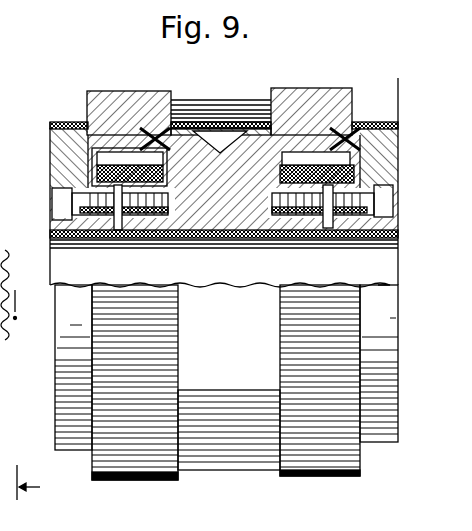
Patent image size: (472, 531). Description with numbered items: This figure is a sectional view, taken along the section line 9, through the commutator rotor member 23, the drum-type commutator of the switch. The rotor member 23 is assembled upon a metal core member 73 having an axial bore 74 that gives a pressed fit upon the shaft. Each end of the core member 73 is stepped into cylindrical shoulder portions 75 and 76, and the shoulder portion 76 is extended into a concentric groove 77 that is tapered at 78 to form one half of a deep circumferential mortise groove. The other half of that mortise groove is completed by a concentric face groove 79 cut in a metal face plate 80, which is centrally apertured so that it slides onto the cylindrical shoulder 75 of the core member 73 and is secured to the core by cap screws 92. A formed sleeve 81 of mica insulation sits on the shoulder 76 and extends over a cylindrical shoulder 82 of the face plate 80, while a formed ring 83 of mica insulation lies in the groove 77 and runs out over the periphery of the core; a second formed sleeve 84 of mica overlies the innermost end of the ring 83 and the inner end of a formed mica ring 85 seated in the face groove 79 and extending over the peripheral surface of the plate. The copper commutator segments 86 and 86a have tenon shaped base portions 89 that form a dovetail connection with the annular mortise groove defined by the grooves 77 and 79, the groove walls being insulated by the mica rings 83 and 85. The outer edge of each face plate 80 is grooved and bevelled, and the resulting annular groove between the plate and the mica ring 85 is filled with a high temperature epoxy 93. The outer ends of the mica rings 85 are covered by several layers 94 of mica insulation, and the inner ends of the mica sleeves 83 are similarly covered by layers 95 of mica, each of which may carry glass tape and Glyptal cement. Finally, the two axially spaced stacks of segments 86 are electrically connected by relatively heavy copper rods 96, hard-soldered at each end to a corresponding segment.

The section line 9 is at (36, 483).
The commutator rotor member 23 is at (236, 334).
The metal core member 73 is at (232, 239).
The axial bore 74 is at (118, 240).
The cylindrical shoulder portion 75 is at (82, 240).
The cylindrical shoulder portion 76 is at (273, 192).
The concentric groove 77 is at (268, 167).
The taper 78 is at (183, 122).
The concentric face groove 79 is at (60, 171).
The metal face plate 80 is at (398, 128).
The formed sleeve of mica insulation 81 is at (277, 177).
The cylindrical shoulder 82 is at (50, 219).
The formed ring of mica insulation 83 is at (204, 122).
The second formed sleeve of mica insulation 84 is at (120, 140).
The formed mica ring 85 is at (52, 149).
The electrically engaging segments 86 is at (155, 92).
The electrically engaging segments 86a is at (9, 264).
The tenon shaped base portions 89 is at (133, 186).
The cap screws 92 is at (52, 208).
The high temperature epoxy 93 is at (52, 122).
The layers of mica insulation 94 is at (70, 122).
The layers of mica insulation 95 is at (240, 120).
The copper rods 96 is at (222, 110).